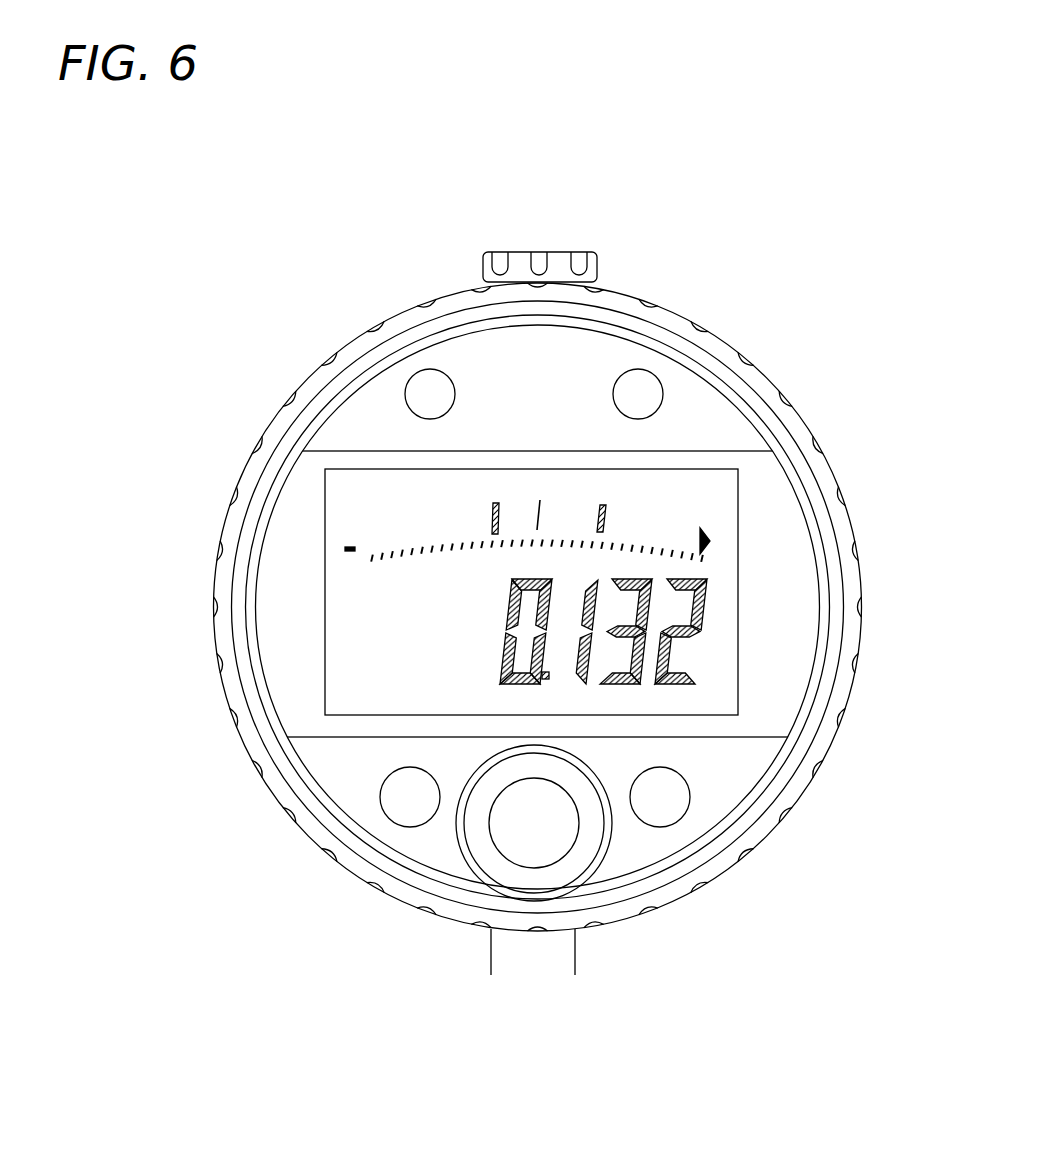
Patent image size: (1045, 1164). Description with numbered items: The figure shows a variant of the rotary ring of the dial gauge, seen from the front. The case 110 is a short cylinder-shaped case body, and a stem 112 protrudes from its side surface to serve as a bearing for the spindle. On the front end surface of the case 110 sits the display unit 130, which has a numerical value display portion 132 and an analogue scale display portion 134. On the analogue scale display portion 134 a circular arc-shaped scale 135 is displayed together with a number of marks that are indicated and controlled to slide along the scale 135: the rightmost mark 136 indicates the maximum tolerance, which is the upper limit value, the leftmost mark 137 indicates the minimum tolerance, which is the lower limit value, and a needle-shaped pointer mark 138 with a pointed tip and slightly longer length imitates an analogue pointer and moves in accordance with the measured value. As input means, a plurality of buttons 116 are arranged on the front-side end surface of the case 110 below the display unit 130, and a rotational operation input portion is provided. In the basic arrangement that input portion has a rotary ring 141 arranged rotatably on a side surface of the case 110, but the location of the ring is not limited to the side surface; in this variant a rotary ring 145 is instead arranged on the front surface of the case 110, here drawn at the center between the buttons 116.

The case 110 is at (390, 387).
The stem 112 is at (572, 950).
The buttons 116 is at (408, 812).
The display unit 130 is at (350, 682).
The numerical value display portion 132 is at (719, 702).
The analogue scale display portion 134 is at (715, 488).
The circular arc-shaped scale 135 is at (374, 580).
The mark for indicating the maximum tolerance 136 is at (604, 520).
The mark for indicating the minimum tolerance 137 is at (493, 530).
The pointer mark 138 is at (534, 518).
The rotary ring 141 is at (230, 530).
The rotary ring 145 is at (578, 867).